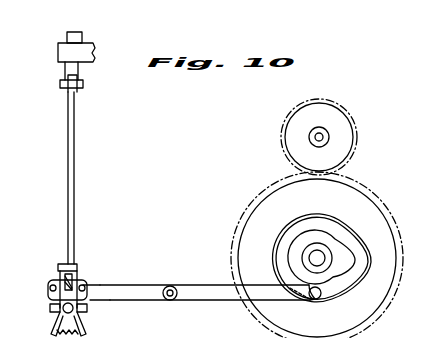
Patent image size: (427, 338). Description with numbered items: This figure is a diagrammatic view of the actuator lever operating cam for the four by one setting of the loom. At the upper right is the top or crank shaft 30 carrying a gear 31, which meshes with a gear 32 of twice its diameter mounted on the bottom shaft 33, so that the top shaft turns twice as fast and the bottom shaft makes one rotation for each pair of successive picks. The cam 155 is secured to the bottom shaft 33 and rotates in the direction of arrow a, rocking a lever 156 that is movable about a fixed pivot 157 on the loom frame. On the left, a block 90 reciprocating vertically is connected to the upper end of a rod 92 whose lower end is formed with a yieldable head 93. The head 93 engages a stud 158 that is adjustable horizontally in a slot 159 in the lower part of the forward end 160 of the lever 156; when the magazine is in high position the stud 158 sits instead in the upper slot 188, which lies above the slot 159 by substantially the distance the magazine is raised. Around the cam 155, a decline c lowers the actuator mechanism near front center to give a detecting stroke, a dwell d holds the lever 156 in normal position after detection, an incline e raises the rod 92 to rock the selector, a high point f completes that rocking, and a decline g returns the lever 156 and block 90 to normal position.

The block 90 is at (67, 36).
The rod 92 is at (68, 133).
The yieldable head 93 is at (62, 272).
The upper slot 188 is at (82, 287).
The stud 158 is at (50, 313).
The slot 159 is at (87, 305).
The forward end 160 is at (88, 300).
The lever 156 is at (213, 294).
The fixed pivot 157 is at (171, 286).
The cam 155 is at (335, 218).
The gear 31 is at (319, 99).
The top or crank shaft 30 is at (322, 134).
The gear 32 is at (284, 182).
The bottom shaft 33 is at (319, 257).
The arrow a is at (349, 302).
The decline c is at (290, 275).
The dwell d is at (306, 222).
The incline e is at (349, 240).
The high point f is at (365, 263).
The decline g is at (345, 288).